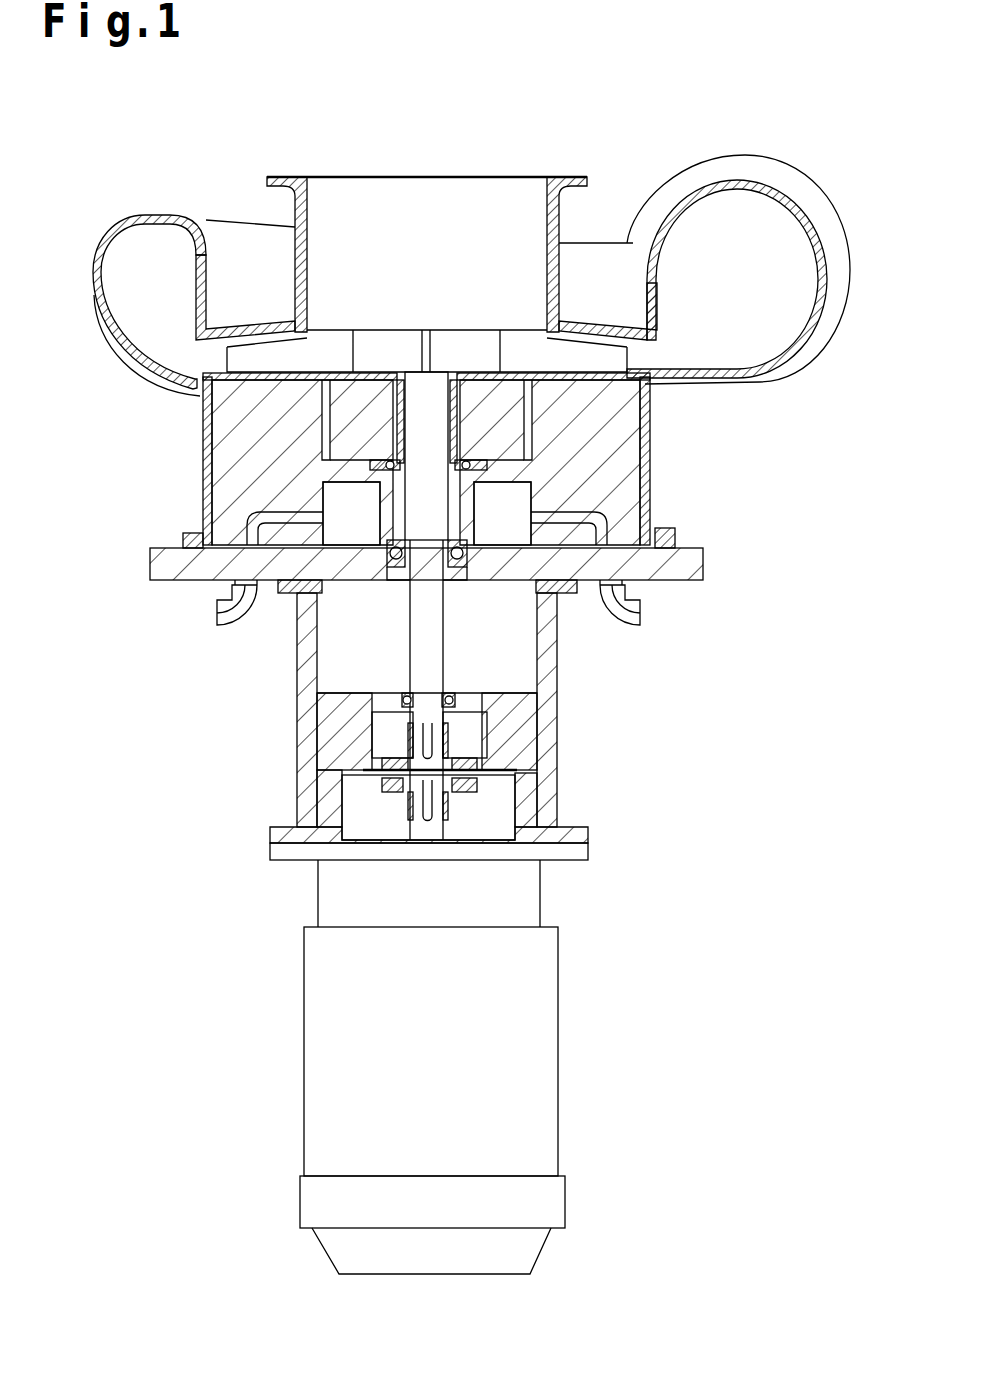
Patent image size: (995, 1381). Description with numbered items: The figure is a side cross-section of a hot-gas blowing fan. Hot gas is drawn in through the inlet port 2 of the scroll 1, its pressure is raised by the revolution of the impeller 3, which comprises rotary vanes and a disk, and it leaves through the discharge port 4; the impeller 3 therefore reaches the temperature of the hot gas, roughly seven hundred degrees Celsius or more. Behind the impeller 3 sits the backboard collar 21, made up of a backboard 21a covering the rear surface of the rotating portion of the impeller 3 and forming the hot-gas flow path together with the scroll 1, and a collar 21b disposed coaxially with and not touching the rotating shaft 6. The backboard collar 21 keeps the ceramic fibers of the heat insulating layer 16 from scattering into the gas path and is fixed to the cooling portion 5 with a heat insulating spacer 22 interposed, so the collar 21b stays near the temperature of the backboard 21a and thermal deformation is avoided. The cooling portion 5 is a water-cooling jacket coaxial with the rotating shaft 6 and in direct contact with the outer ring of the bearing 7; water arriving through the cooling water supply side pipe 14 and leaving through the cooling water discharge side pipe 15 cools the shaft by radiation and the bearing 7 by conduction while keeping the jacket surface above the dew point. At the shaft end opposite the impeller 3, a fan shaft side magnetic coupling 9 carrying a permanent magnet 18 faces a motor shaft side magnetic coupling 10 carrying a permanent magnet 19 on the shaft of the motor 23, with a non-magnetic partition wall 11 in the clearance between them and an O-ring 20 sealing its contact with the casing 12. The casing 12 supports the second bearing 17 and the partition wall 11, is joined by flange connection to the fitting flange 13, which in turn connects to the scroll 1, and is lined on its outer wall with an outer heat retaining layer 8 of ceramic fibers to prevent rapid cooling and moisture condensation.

The scroll 1 is at (107, 230).
The inlet port of scroll 2 is at (423, 175).
The impeller 3 is at (470, 325).
The discharge port of scroll 4 is at (726, 267).
The cooling portion 5 is at (535, 505).
The rotating shaft 6 is at (430, 468).
The bearing 7 is at (700, 550).
The outer heat retaining layer 8 is at (560, 655).
The fan shaft side magnetic coupling 9 is at (465, 750).
The motor shaft side magnetic coupling 10 is at (462, 768).
The non-magnetic partition wall 11 is at (472, 774).
The casing 12 is at (297, 638).
The fitting flange 13 is at (680, 580).
The cooling water supply side pipe 14 is at (217, 624).
The cooling water discharge side pipe 15 is at (640, 622).
The heat insulating layer 16 is at (208, 447).
The second bearing 17 is at (456, 696).
The permanent magnet 18 is at (365, 707).
The permanent magnet 19 is at (400, 780).
The O-ring 20 is at (373, 767).
The backboard collar 21 is at (240, 442).
The backboard 21a is at (650, 380).
The collar 21b is at (467, 428).
The heat insulating spacer 22 is at (323, 483).
The motor 23 is at (302, 1001).